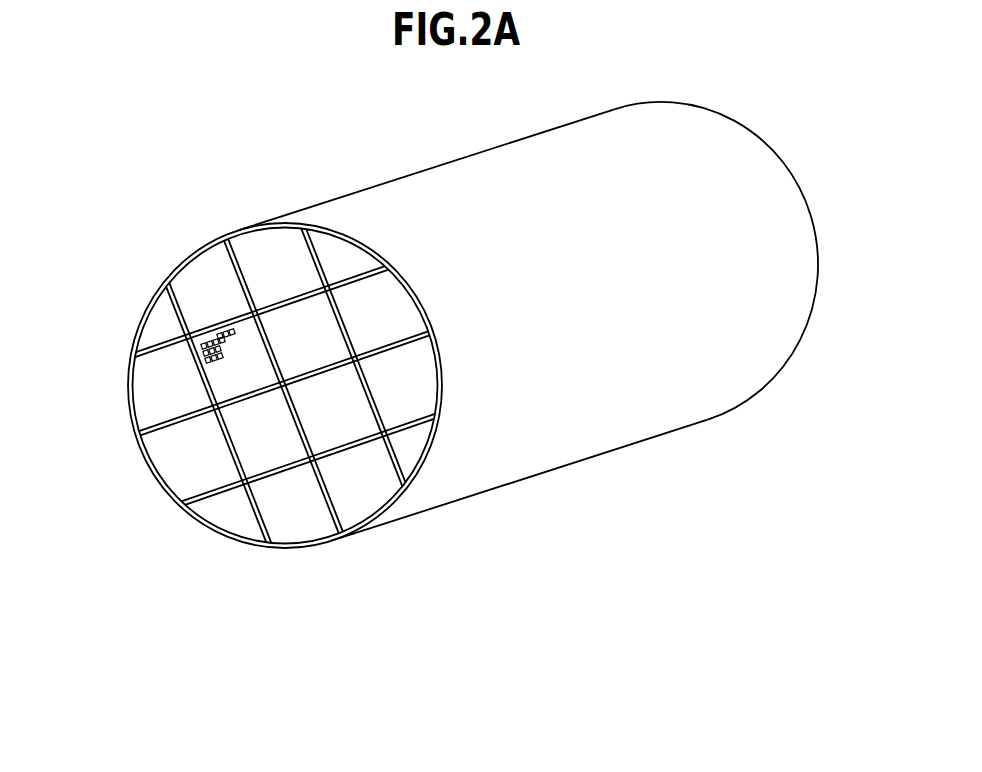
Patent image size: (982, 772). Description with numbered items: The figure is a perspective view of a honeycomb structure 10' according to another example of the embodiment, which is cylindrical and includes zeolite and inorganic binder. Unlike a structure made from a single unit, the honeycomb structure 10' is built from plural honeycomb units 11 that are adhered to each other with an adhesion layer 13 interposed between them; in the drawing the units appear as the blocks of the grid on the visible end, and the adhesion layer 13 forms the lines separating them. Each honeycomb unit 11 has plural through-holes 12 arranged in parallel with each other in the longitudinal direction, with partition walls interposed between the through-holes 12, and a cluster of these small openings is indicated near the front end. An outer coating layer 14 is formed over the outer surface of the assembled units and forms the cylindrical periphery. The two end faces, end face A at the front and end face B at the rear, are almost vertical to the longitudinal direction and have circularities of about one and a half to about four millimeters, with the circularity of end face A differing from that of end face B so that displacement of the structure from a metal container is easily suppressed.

The honeycomb structure 10' is at (528, 314).
The honeycomb unit 11 is at (280, 417).
The through-hole 12 is at (224, 359).
The adhesion layer 13 is at (393, 466).
The outer coating layer 14 is at (190, 256).
The end face A is at (215, 387).
The end face B is at (826, 166).